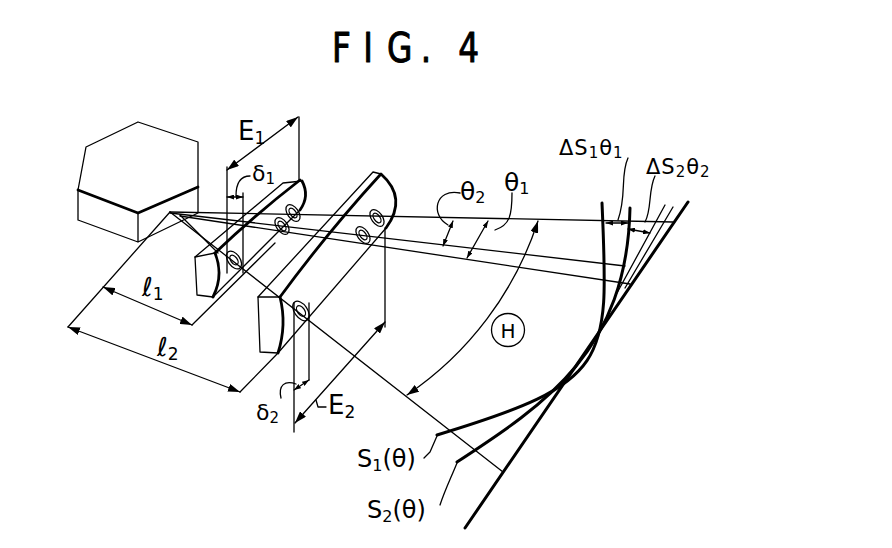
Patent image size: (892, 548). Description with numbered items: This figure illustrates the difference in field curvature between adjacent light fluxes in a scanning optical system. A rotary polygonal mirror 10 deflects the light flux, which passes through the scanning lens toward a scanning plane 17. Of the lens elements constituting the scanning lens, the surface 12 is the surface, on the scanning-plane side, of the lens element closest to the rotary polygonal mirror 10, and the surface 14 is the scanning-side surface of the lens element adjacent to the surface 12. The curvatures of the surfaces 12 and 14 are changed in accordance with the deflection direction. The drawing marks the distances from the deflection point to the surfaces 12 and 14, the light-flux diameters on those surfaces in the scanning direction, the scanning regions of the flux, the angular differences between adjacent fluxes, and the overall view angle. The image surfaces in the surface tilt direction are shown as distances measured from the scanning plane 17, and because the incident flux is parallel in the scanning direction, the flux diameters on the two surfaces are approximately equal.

The rotary polygonal mirror 10 is at (122, 124).
The surface of lens element closest to rotary polygonal mirror 12 is at (306, 190).
The surface of adjacent lens element 14 is at (391, 193).
The scanning plane 17 is at (487, 497).